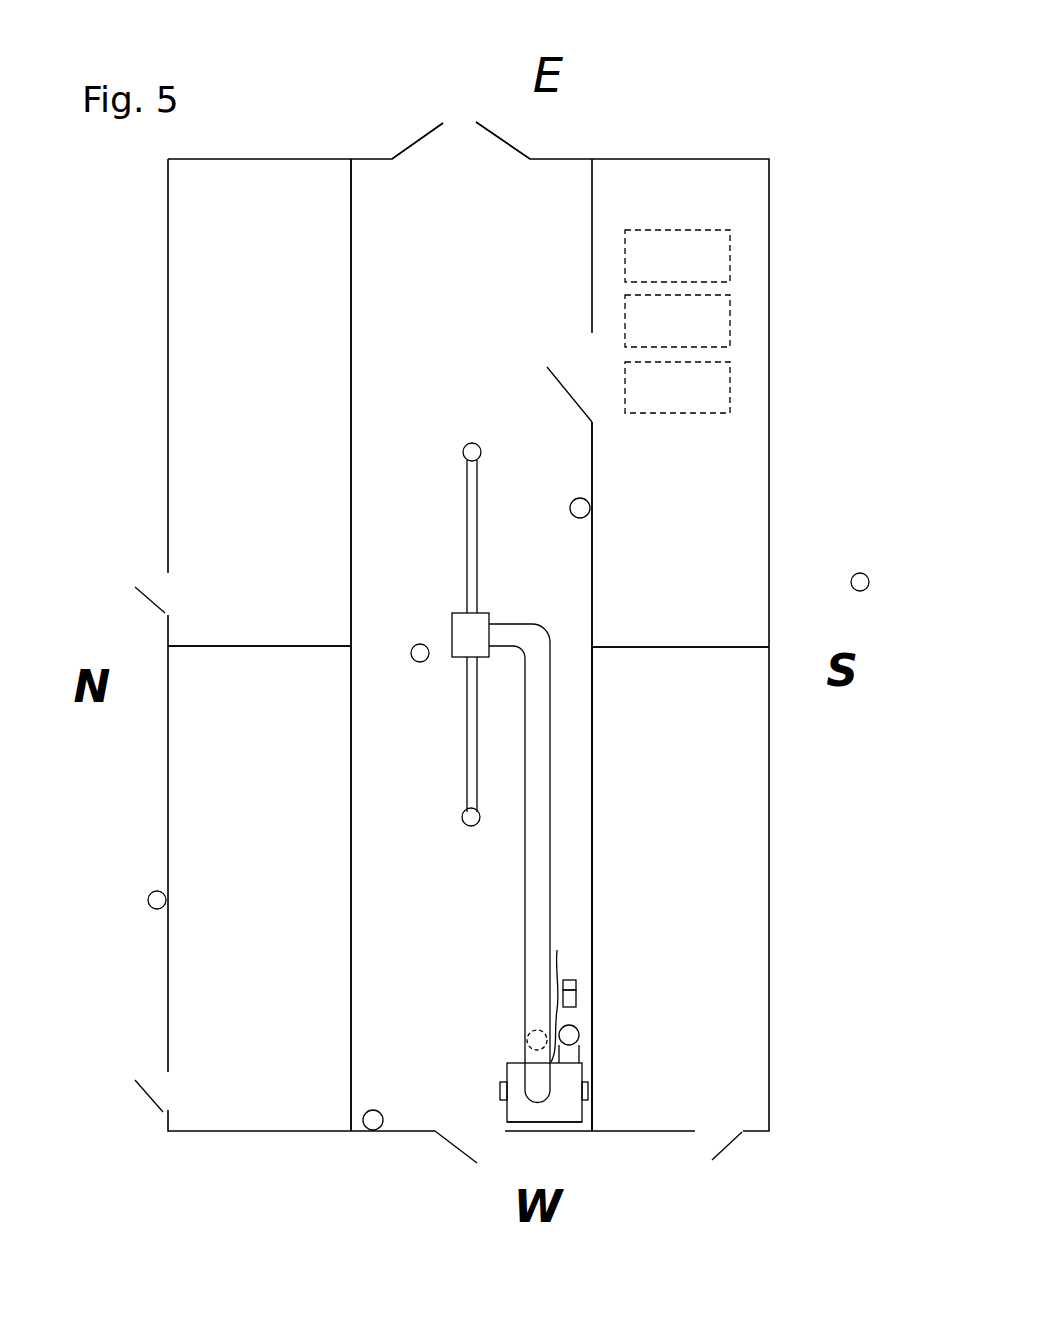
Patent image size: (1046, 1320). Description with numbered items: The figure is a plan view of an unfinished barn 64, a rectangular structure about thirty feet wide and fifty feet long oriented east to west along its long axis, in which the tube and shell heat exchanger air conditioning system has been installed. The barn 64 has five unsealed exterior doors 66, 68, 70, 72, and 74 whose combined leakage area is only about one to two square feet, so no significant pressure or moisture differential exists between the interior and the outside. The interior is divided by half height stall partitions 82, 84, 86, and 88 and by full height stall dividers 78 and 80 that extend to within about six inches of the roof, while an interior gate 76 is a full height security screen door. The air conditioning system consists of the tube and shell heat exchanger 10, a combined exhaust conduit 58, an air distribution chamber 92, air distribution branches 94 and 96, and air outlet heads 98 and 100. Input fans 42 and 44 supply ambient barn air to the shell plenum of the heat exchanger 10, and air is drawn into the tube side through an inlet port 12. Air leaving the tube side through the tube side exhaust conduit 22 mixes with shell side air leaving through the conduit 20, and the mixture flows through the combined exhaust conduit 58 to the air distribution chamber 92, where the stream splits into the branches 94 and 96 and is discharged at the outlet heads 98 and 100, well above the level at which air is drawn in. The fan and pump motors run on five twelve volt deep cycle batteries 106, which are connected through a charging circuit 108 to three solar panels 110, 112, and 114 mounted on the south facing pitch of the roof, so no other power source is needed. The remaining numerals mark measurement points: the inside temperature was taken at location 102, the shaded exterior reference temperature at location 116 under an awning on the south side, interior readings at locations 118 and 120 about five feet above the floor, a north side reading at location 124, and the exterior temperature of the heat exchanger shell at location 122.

The tube and shell heat exchanger 10 is at (560, 1105).
The inlet port 12 is at (580, 1035).
The conduit 20 is at (527, 1040).
The tube side exhaust conduit 22 is at (503, 1083).
The input fan 42 is at (587, 1095).
The input fan 44 is at (533, 1073).
The combined exhaust conduit 58 is at (537, 888).
The barn 64 is at (678, 109).
The exterior door 66 is at (462, 135).
The exterior door 68 is at (173, 592).
The exterior door 70 is at (162, 1085).
The exterior door 72 is at (463, 1128).
The exterior door 74 is at (707, 1135).
The interior gate 76 is at (560, 382).
The stall divider 78 is at (590, 505).
The stall divider 80 is at (630, 648).
The stall partition 82 is at (592, 838).
The stall partition 84 is at (352, 333).
The stall partition 86 is at (332, 648).
The stall partition 88 is at (349, 850).
The air distribution chamber 92 is at (467, 637).
The air distribution branch 94 is at (467, 555).
The air distribution branch 96 is at (468, 763).
The air outlet head 98 is at (472, 443).
The air outlet head 100 is at (477, 823).
The location 102 is at (411, 653).
The batteries 106 is at (570, 998).
The charging circuit 108 is at (575, 988).
The solar panel 110 is at (720, 240).
The solar panel 112 is at (722, 318).
The solar panel 114 is at (713, 388).
The location 116 is at (851, 582).
The location 118 is at (370, 1111).
The location 120 is at (574, 505).
The location 122 is at (557, 950).
The location 124 is at (150, 897).